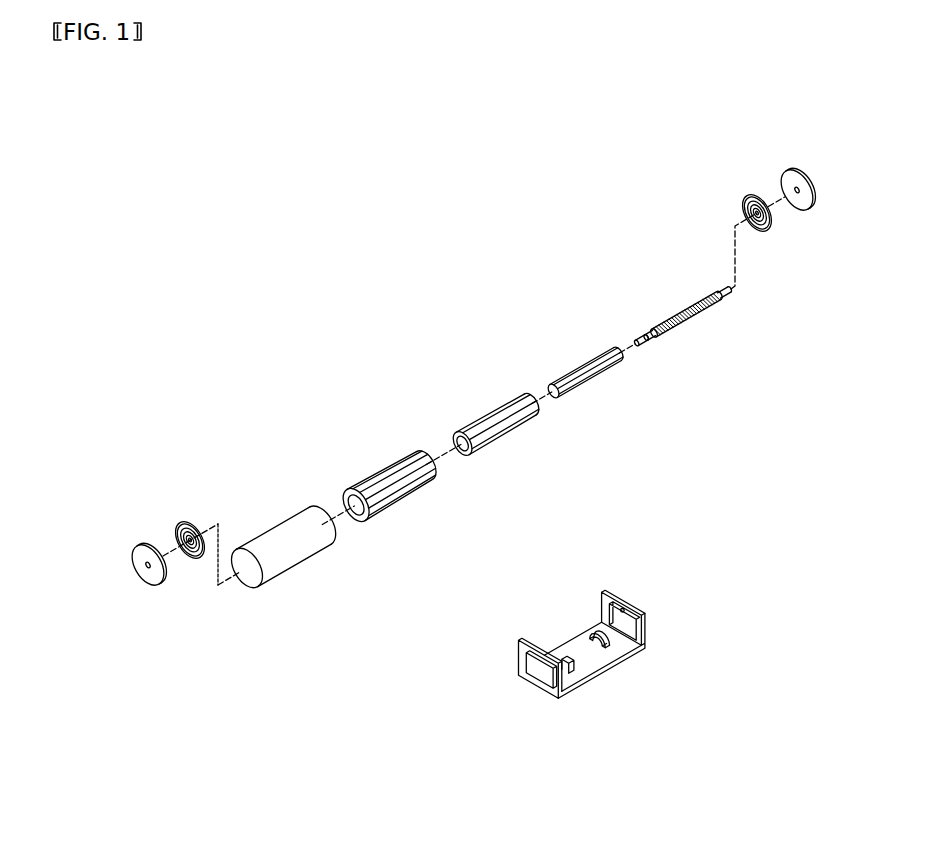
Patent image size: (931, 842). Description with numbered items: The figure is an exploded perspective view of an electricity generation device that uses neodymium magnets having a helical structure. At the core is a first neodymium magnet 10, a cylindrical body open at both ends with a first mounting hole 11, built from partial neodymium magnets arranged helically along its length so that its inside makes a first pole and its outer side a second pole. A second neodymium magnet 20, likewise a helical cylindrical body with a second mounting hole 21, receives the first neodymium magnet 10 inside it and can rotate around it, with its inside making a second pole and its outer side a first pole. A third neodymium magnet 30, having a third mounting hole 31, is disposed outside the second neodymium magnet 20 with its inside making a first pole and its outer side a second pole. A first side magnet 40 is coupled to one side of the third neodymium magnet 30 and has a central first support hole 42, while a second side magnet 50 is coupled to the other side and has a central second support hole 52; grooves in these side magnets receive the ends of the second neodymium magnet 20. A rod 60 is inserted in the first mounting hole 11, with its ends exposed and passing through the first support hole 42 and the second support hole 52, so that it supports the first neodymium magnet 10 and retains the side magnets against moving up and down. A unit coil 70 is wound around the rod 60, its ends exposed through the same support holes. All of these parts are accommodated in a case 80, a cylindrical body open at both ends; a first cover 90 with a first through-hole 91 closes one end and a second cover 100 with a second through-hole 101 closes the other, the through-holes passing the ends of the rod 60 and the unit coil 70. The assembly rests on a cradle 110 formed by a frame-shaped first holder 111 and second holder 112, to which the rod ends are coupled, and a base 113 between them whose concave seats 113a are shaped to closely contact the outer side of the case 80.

The first neodymium magnet 10 is at (579, 361).
The first mounting hole 11 is at (550, 408).
The second neodymium magnet 20 is at (482, 410).
The second mounting hole 21 is at (458, 453).
The third neodymium magnet 30 is at (380, 467).
The third mounting hole 31 is at (350, 523).
The first side magnet 40 is at (178, 515).
The first support hole 42 is at (183, 560).
The second side magnet 50 is at (743, 193).
The second support hole 52 is at (747, 227).
The rod 60 is at (625, 322).
The unit coil 70 is at (665, 322).
The case 80 is at (268, 528).
The first cover 90 is at (150, 585).
The first through-hole 91 is at (140, 578).
The second cover 100 is at (793, 168).
The second through-hole 101 is at (792, 202).
The cradle 110 is at (627, 686).
The first holder 111 is at (553, 677).
The second holder 112 is at (644, 610).
The base 113 is at (637, 658).
The seats 113a is at (603, 630).